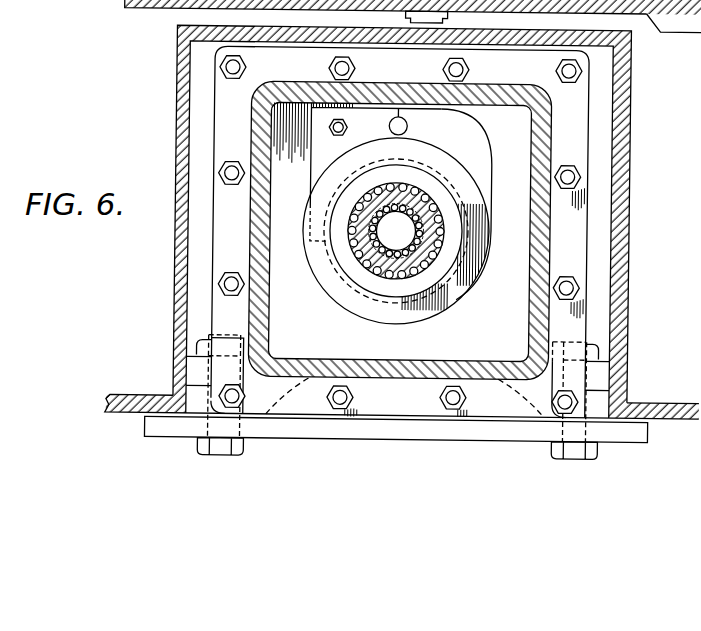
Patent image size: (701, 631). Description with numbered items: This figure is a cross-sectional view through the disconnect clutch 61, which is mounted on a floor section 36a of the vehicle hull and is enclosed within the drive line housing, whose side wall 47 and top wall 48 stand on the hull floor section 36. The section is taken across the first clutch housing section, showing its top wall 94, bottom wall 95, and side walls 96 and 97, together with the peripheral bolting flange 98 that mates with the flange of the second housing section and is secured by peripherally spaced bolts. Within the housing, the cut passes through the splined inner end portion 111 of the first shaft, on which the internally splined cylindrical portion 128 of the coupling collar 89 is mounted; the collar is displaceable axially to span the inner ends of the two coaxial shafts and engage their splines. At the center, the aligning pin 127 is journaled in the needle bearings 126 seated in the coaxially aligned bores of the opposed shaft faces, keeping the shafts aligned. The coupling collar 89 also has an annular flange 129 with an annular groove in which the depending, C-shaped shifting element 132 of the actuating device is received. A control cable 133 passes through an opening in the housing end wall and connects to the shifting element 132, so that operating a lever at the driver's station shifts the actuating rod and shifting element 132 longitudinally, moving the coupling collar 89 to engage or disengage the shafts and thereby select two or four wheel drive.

The floor section 36 is at (112, 414).
The floor section 36a is at (413, 438).
The side wall 47 is at (629, 224).
The top wall 48 is at (606, 28).
The disconnect clutch 61 is at (555, 136).
The coupling collar 89 is at (403, 330).
The top wall 94 is at (412, 82).
The bottom wall 95 is at (377, 377).
The side wall 96 is at (251, 324).
The side wall 97 is at (528, 323).
The peripheral bolting flange 98 is at (577, 320).
The splined inner end portion 111 is at (433, 262).
The needle bearings 126 is at (420, 220).
The aligning pin 127 is at (392, 220).
The internally splined cylindrical portion 128 is at (378, 293).
The annular flange 129 is at (322, 280).
The shifting element 132 is at (469, 136).
The control cable 133 is at (335, 131).